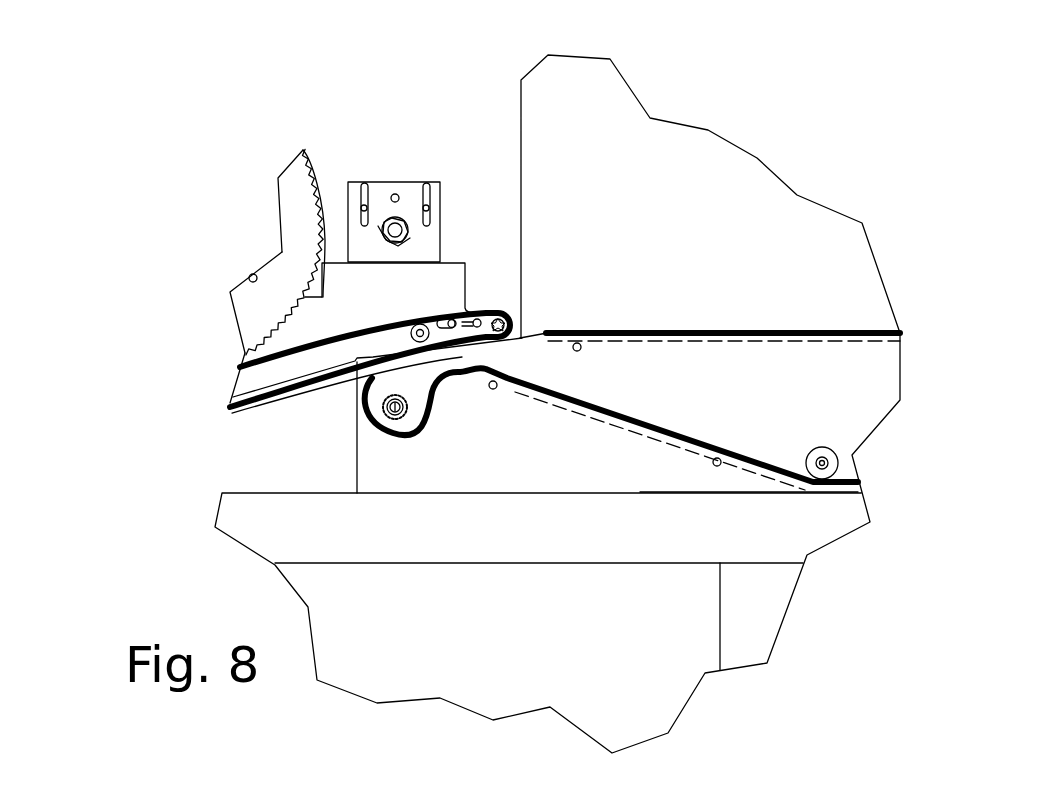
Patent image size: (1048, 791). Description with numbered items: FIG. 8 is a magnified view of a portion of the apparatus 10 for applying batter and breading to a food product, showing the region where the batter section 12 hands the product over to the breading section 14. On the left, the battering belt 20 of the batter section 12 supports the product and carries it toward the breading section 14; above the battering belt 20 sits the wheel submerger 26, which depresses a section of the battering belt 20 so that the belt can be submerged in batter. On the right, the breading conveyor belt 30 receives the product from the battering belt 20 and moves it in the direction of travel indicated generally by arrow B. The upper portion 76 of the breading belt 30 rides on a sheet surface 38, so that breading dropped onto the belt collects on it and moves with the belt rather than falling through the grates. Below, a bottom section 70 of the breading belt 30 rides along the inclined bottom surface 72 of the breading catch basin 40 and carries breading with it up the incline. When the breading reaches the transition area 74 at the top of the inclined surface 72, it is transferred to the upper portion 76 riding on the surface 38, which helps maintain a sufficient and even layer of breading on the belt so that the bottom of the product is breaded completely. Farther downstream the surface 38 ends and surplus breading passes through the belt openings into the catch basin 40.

The apparatus 10 is at (230, 135).
The batter section 12 is at (160, 200).
The breading section 14 is at (912, 212).
The battering belt 20 is at (362, 328).
The wheel submerger 26 is at (295, 183).
The breading conveyor belt 30 is at (713, 333).
The sheet surface 38 is at (672, 343).
The breading catch basin 40 is at (848, 402).
The bottom section of the breading belt 70 is at (640, 412).
The bottom surface of the basin 72 is at (577, 410).
The transition area 74 is at (470, 398).
The upper portion of the breading belt 76 is at (596, 333).
The arrow indicating direction of travel B is at (350, 395).